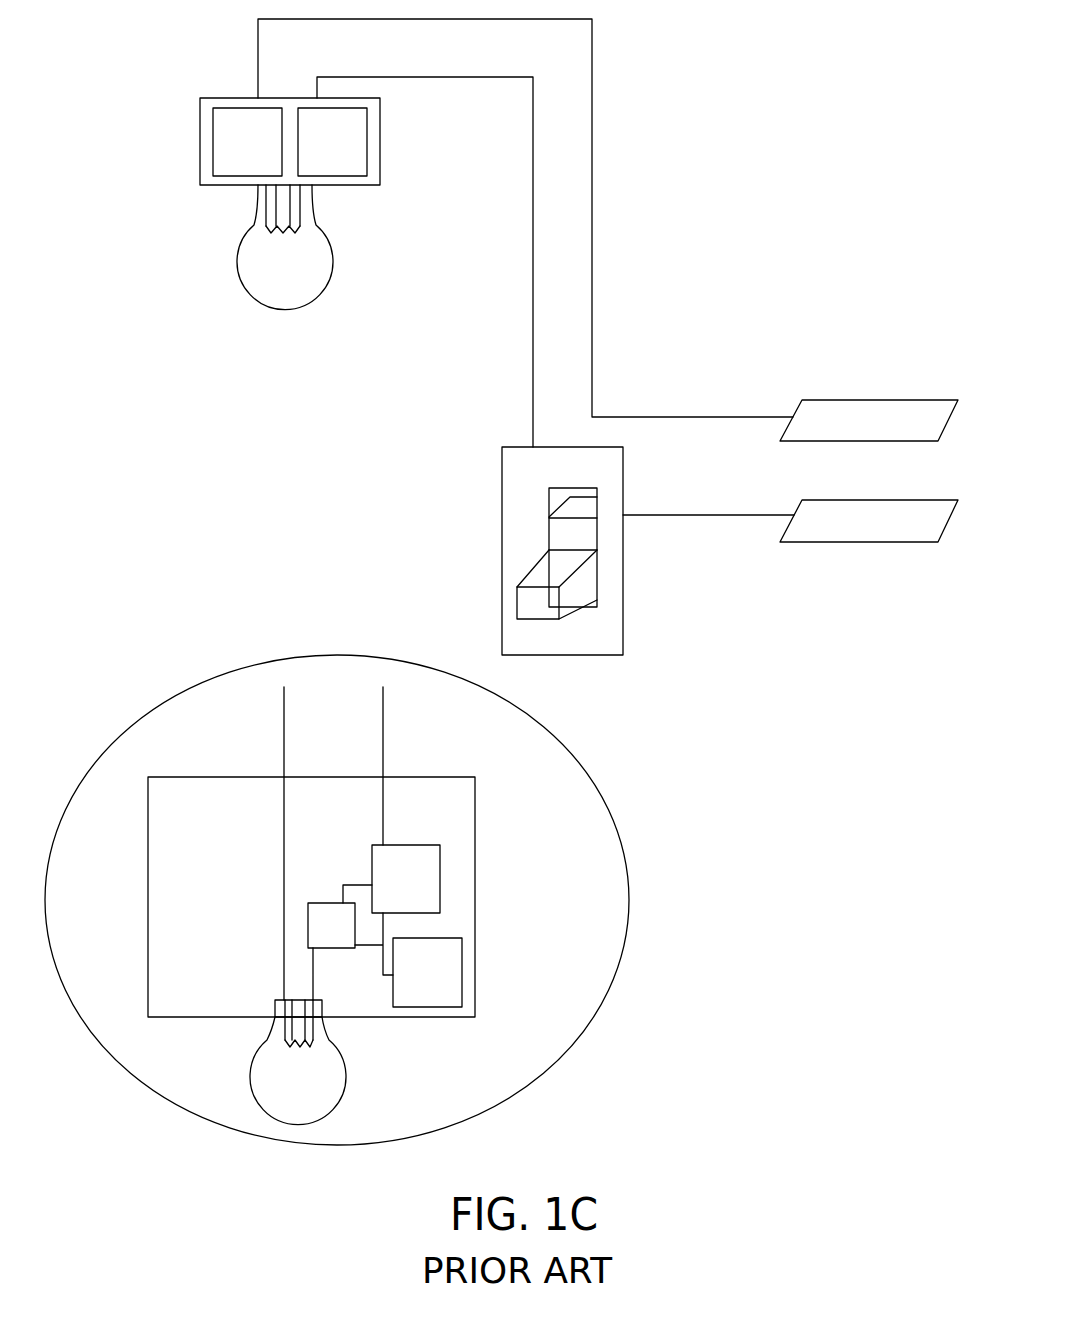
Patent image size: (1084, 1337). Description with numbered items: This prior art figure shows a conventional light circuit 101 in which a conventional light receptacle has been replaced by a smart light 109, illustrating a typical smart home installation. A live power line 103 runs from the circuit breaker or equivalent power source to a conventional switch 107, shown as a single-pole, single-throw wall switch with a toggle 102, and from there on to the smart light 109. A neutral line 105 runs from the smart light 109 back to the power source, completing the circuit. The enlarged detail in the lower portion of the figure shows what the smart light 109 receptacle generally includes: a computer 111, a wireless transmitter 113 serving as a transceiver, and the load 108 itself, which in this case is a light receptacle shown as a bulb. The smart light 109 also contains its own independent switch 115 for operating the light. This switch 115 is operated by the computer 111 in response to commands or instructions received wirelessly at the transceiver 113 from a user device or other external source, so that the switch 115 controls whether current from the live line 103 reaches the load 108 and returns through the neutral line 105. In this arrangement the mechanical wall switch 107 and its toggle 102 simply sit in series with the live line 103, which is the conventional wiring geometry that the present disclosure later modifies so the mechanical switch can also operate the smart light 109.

The light circuit 101 is at (152, 404).
The toggle 102 is at (545, 600).
The live power line 103 is at (716, 520).
The neutral line 105 is at (716, 417).
The switch 107 is at (502, 527).
The load 108 is at (300, 310).
The smart light 109 is at (200, 108).
The computer 111 is at (367, 155).
The wireless transmitter 113 is at (213, 160).
The independent switch 115 is at (326, 903).